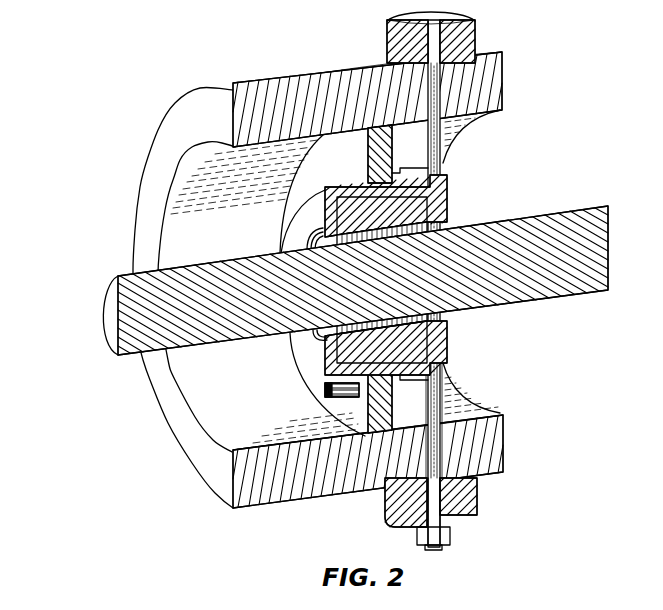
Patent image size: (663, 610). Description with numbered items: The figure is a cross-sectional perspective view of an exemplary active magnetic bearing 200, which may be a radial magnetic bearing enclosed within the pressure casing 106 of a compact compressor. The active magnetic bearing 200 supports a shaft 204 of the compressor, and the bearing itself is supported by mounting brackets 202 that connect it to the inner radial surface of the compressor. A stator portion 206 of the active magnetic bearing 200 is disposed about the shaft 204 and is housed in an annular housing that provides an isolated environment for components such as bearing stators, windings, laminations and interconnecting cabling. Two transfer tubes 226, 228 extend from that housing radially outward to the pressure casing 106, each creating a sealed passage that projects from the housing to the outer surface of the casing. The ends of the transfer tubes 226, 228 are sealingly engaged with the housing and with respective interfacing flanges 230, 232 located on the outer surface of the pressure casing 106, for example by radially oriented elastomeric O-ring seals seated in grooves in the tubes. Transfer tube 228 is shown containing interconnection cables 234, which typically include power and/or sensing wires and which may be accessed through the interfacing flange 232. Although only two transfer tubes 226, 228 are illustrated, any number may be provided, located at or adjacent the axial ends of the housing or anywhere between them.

The pressure casing 106 is at (277, 80).
The active magnetic bearing 200 is at (288, 368).
The mounting brackets 202 is at (380, 137).
The shaft 204 is at (105, 318).
The stator portion 206 is at (443, 198).
The transfer tube 226 is at (443, 163).
The transfer tube 228 is at (452, 382).
The interfacing flange 230 is at (477, 32).
The interfacing flange 232 is at (477, 495).
The interconnection cables 234 is at (435, 408).